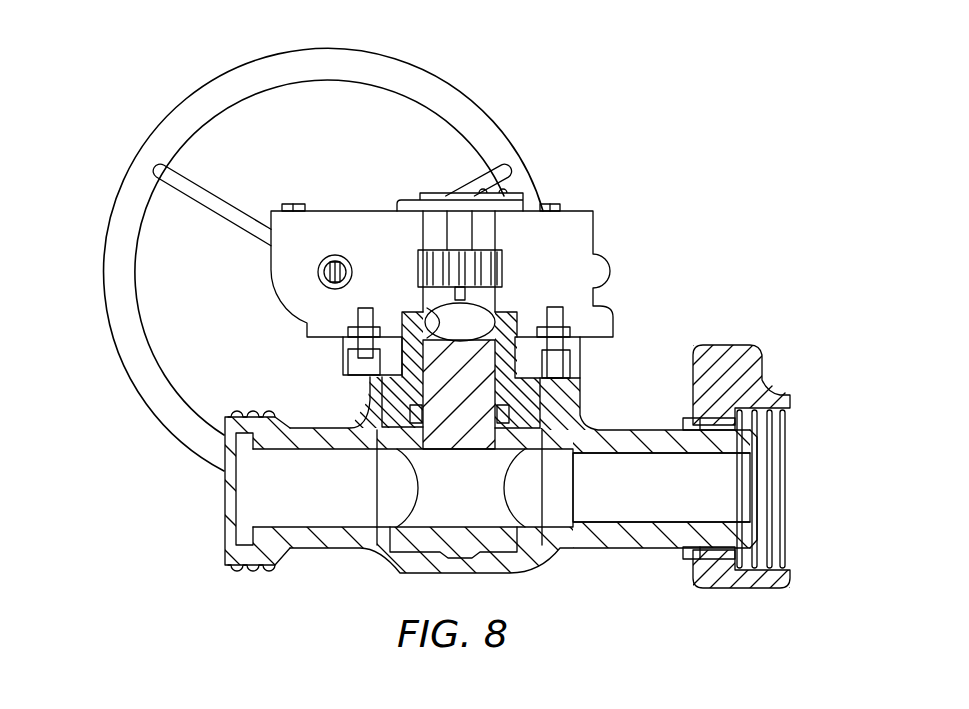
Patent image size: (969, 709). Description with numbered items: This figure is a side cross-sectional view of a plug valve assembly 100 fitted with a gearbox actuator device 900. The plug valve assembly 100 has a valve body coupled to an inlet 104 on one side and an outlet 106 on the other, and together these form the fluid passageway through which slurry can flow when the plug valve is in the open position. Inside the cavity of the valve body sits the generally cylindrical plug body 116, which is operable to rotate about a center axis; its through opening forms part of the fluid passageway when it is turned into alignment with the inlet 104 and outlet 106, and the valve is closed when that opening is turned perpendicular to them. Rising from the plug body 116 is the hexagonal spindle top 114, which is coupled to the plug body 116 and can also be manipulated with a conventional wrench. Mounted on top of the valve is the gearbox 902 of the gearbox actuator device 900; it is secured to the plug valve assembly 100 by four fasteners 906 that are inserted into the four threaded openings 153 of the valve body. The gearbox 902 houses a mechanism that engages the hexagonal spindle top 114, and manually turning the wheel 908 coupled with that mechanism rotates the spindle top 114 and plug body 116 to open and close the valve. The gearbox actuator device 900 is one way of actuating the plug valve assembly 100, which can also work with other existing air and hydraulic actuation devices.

The plug valve assembly 100 is at (699, 280).
The inlet 104 is at (300, 590).
The outlet 106 is at (720, 607).
The spindle top 114 is at (483, 294).
The plug body 116 is at (556, 500).
The threaded openings 153 is at (580, 352).
The gearbox actuator device 900 is at (603, 172).
The gearbox 902 is at (595, 248).
The fasteners 906 is at (347, 356).
The wheel 908 is at (418, 64).